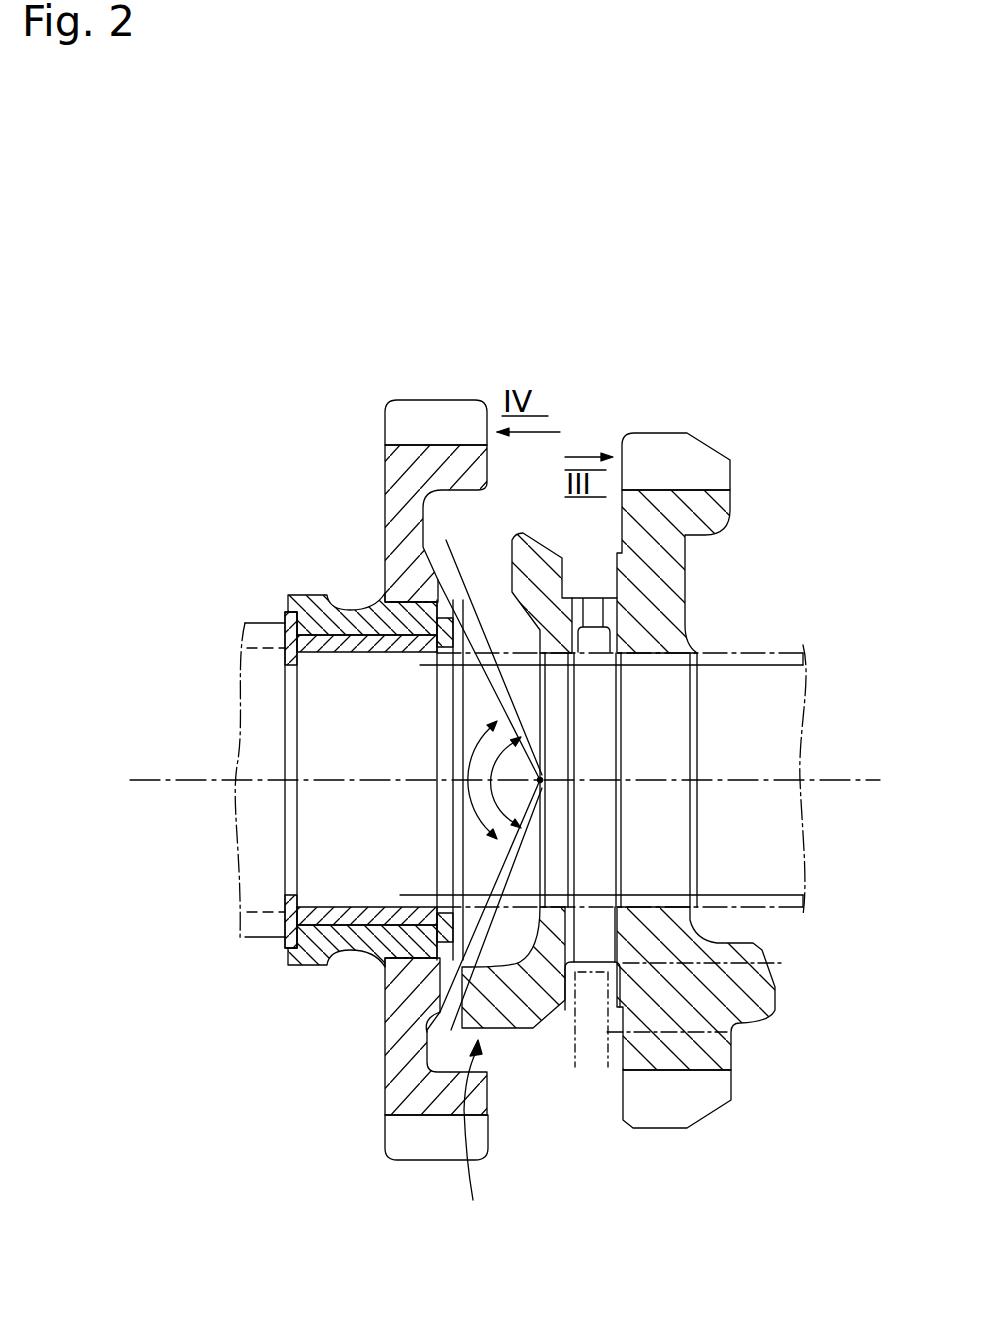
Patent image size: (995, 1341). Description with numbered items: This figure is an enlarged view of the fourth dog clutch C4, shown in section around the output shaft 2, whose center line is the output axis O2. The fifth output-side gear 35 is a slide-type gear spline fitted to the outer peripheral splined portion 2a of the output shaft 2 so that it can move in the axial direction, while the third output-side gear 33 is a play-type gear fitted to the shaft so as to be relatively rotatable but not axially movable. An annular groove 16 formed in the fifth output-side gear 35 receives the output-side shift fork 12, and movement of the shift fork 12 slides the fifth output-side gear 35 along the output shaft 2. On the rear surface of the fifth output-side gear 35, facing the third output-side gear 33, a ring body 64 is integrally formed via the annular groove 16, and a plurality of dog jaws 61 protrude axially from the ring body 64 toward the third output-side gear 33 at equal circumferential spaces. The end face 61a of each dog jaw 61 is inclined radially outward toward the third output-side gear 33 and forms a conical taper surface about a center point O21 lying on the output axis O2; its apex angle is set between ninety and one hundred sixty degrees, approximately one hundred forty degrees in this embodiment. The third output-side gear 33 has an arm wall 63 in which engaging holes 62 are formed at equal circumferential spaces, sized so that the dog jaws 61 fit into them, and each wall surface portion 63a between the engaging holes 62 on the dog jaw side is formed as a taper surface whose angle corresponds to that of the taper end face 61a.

The output shaft 2 is at (780, 833).
The outer peripheral splined portion 2a is at (752, 653).
The output-side shift fork 12 is at (731, 1040).
The annular groove 16 is at (592, 594).
The third output-side gear 33 is at (400, 1143).
The fifth output-side gear 35 is at (658, 1110).
The dog jaw 61 is at (753, 1003).
The taper end face 61a is at (445, 992).
The engaging hole 62 is at (380, 580).
The arm wall 63 is at (385, 503).
The wall surface portion 63a is at (447, 541).
The ring body 64 is at (566, 1010).
The output axis O2 is at (188, 782).
The center point O21 is at (540, 780).
The fourth dog clutch C4 is at (466, 1144).